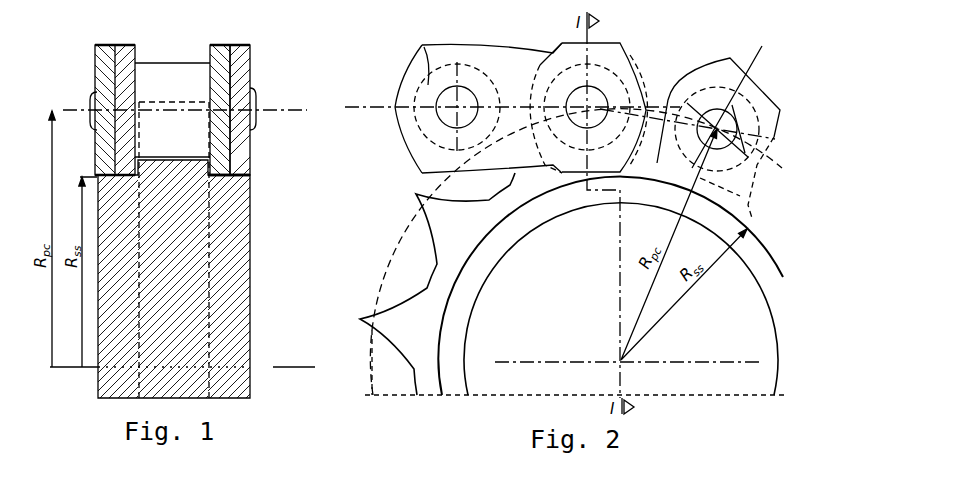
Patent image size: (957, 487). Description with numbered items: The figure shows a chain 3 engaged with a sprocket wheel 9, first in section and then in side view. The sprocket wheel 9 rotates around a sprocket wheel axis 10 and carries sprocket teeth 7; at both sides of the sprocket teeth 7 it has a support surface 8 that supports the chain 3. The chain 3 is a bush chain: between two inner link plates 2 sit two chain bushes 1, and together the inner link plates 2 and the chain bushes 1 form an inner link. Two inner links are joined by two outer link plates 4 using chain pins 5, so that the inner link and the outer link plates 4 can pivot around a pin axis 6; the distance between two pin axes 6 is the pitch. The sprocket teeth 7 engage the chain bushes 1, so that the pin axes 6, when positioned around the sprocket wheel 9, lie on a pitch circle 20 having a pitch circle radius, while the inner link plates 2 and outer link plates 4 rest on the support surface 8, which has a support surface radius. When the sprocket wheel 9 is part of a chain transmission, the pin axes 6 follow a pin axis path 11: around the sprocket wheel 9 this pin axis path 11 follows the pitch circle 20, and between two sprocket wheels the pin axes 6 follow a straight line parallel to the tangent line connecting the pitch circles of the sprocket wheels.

In FIG. 1, the chain bush 1 is at (170, 64).
In FIG. 2, the chain bush 1 is at (423, 45).
In FIG. 1, the inner link plate 2 is at (221, 62).
In FIG. 2, the inner link plate 2 is at (693, 70).
In FIG. 1, the chain 3 is at (258, 36).
In FIG. 2, the chain 3 is at (636, 40).
In FIG. 1, the outer link plate 4 is at (251, 70).
In FIG. 2, the outer link plate 4 is at (508, 77).
In FIG. 1, the chain pin 5 is at (255, 98).
In FIG. 2, the chain pin 5 is at (437, 115).
In FIG. 1, the pin axis 6 is at (266, 112).
In FIG. 2, the pin axis 6 is at (450, 123).
In FIG. 1, the sprocket tooth 7 is at (173, 104).
In FIG. 1, the support surface 8 is at (232, 181).
In FIG. 1, the sprocket wheel 9 is at (237, 295).
In FIG. 2, the sprocket wheel 9 is at (571, 252).
In FIG. 1, the sprocket wheel axis 10 is at (275, 367).
In FIG. 2, the sprocket wheel axis 10 is at (618, 361).
In FIG. 2, the pin axis path 11 is at (372, 107).
In FIG. 2, the pitch circle 20 is at (737, 98).